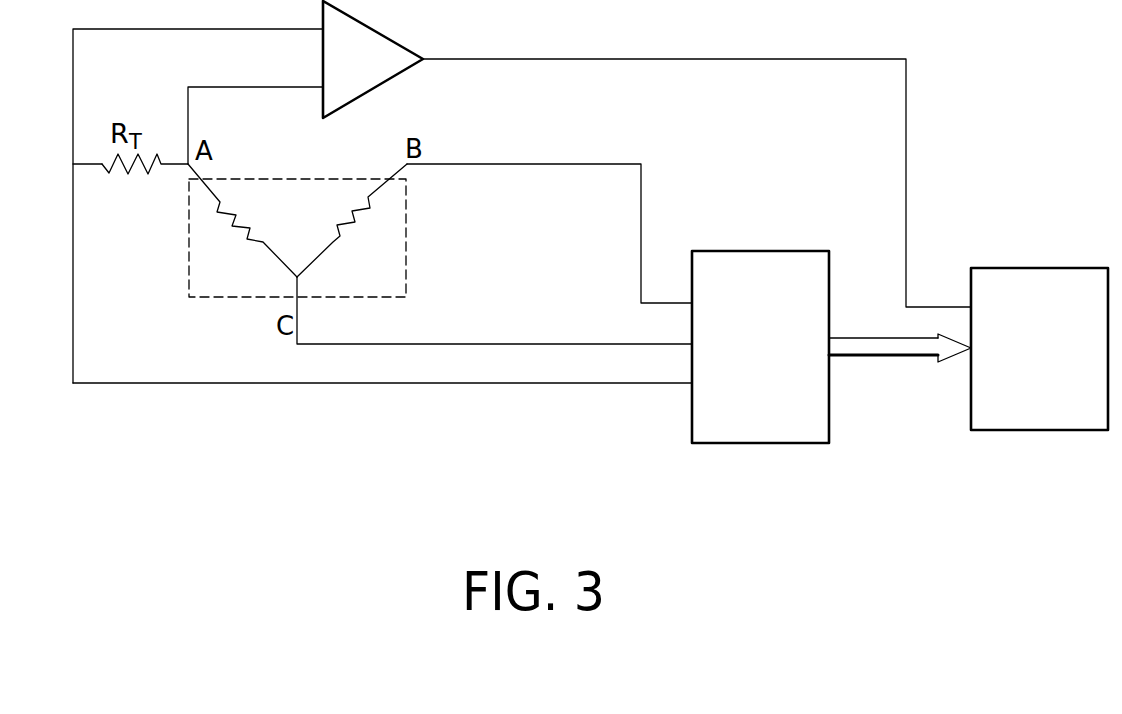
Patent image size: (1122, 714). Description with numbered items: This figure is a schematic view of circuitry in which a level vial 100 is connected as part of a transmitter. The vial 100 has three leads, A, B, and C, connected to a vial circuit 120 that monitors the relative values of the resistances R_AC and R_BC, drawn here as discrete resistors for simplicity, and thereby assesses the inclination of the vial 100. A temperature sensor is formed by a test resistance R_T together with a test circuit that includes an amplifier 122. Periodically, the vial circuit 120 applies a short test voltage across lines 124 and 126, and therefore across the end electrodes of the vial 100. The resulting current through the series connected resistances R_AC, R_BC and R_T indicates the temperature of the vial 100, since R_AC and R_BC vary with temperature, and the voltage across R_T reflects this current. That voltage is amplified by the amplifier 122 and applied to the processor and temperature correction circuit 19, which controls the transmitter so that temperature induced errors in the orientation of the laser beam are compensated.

The amplifier 122 is at (383, 83).
The line 126 is at (641, 195).
The line 124 is at (587, 383).
The level vial 100 is at (365, 248).
The vial circuit 120 is at (785, 402).
The processor and temperature correction circuit 19 is at (1021, 364).